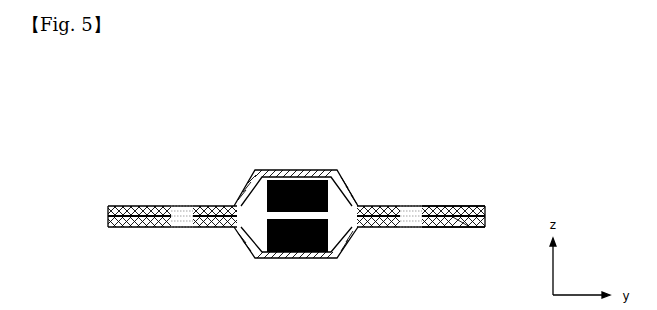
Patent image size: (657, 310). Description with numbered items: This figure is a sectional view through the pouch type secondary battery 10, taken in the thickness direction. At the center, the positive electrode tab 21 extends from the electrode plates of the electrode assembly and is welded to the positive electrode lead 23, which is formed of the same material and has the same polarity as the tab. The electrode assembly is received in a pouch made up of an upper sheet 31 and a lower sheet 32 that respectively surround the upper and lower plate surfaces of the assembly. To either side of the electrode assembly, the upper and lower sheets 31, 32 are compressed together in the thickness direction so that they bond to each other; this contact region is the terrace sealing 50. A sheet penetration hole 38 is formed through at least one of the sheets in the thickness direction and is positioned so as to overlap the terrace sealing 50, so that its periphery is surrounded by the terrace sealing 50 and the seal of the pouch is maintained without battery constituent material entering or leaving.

The pouch type secondary battery 10 is at (226, 116).
The positive electrode tab 21 is at (252, 243).
The positive electrode lead 23 is at (343, 192).
The upper sheet 31 is at (452, 206).
The lower sheet 32 is at (455, 228).
The sheet penetration hole 38 is at (180, 205).
The terrace sealing 50 is at (158, 207).